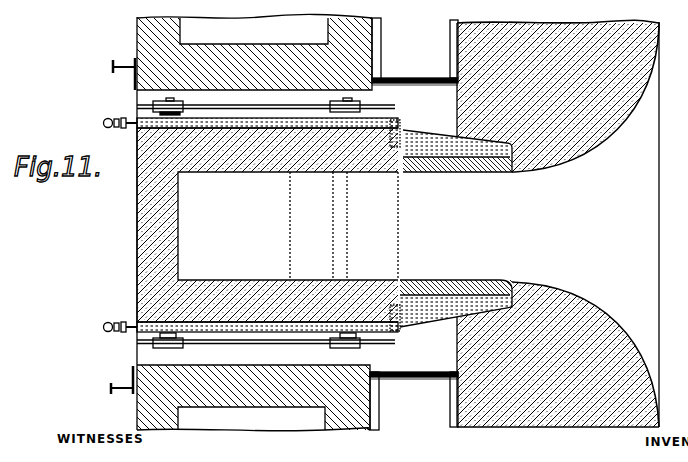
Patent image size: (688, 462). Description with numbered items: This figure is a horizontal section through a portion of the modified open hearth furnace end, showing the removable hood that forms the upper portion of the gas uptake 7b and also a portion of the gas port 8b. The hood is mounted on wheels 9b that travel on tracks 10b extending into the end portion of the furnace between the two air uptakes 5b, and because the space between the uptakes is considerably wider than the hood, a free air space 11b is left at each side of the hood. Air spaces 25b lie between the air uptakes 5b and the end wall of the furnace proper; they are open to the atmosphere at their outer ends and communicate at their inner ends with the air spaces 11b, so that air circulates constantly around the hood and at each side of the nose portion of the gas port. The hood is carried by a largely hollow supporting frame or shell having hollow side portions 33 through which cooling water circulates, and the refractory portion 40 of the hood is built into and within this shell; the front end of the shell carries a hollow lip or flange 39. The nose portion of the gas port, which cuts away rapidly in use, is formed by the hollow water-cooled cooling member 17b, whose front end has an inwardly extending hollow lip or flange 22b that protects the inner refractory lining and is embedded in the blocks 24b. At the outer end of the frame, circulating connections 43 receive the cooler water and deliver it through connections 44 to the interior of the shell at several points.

The free air space 11b is at (223, 90).
The air uptake 5b is at (287, 420).
The track 10b is at (266, 225).
The wheel 9b is at (177, 232).
The hollow side portion 33 is at (335, 333).
The refractory portion 40 is at (260, 160).
The gas uptake 7b is at (234, 226).
The gas port 8b is at (344, 226).
The hollow lip or flange 39 is at (396, 147).
The cooling member 17b is at (466, 150).
The hollow lip or flange 22b is at (504, 283).
The block 24b is at (590, 137).
The air space 25b is at (414, 401).
The circulating connection 43 is at (103, 327).
The connection 44 is at (130, 333).